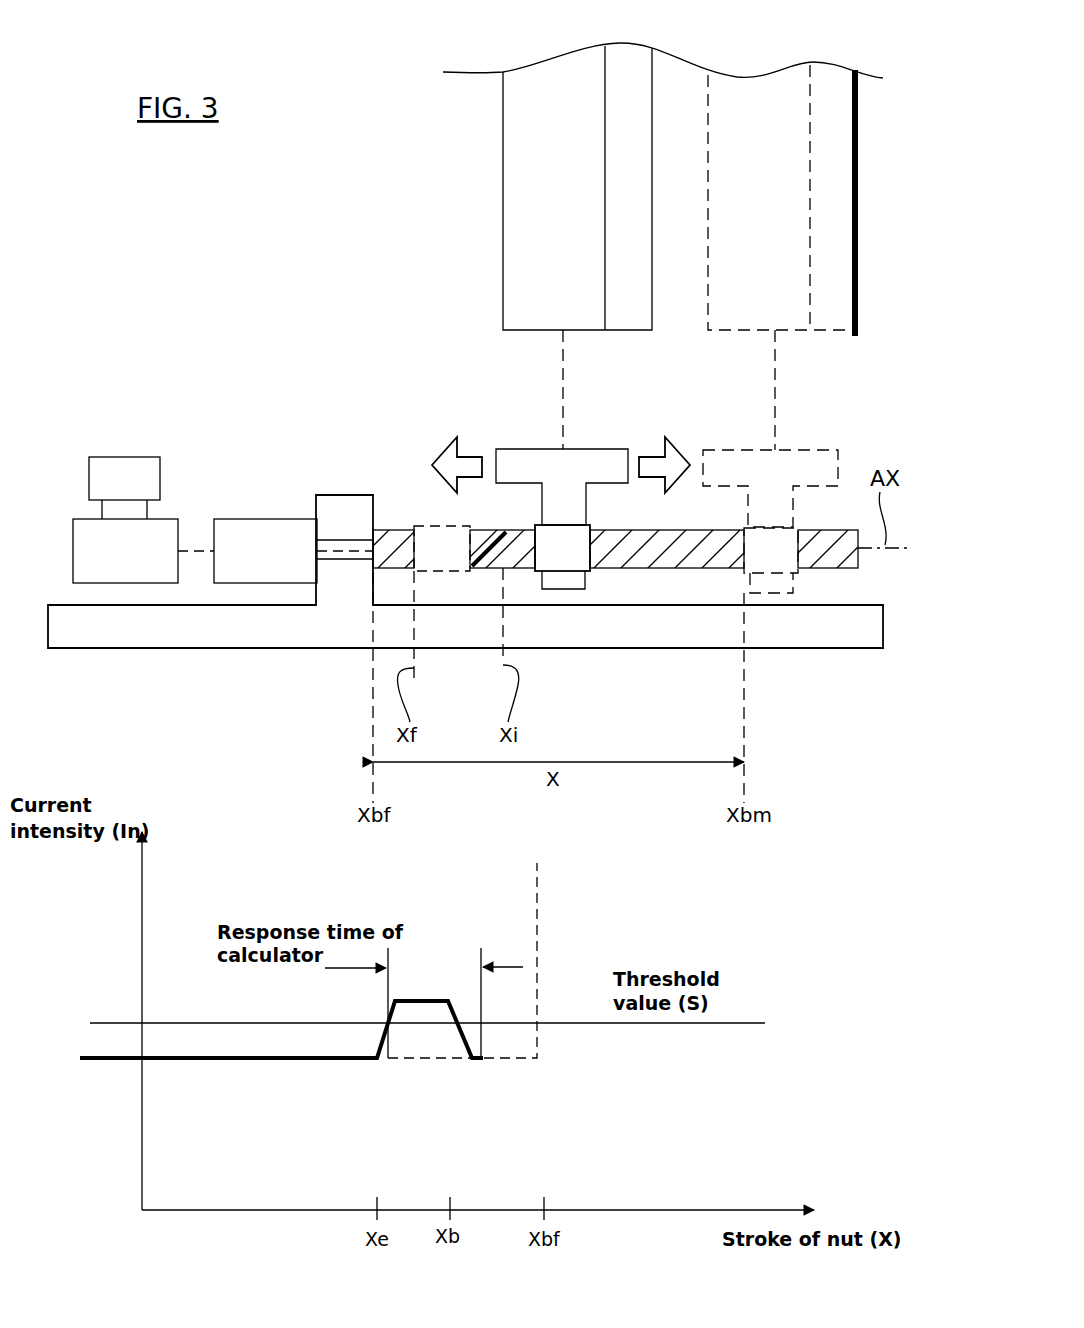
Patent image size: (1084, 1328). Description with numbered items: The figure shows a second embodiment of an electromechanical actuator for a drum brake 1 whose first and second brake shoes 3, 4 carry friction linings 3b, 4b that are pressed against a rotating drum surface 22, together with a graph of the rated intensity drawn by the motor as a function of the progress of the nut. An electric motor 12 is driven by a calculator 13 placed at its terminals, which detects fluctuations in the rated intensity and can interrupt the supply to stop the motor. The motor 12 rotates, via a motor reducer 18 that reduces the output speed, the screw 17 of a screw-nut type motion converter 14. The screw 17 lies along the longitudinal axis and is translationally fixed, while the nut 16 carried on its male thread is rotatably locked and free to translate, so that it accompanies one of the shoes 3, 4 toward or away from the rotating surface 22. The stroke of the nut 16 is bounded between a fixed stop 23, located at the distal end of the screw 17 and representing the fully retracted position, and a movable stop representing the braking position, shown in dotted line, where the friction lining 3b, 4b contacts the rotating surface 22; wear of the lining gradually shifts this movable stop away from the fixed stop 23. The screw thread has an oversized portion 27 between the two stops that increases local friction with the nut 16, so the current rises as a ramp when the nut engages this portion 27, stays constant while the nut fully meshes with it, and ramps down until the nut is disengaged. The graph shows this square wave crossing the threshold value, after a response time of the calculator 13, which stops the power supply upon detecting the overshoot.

The drum brake 1 is at (200, 349).
The first brake shoe 3 is at (610, 186).
The second brake shoe 4 is at (466, 160).
The friction lining 3b is at (747, 221).
The friction lining 4b is at (640, 293).
The electric motor 12 is at (125, 551).
The calculator 13 is at (124, 488).
The screw-nut type motion converter 14 is at (838, 428).
The nut 16 is at (591, 452).
The screw 17 is at (677, 562).
The motor reducer 18 is at (275, 551).
The rotating drum surface 22 is at (852, 112).
The fixed stop 23 is at (373, 512).
The oversized portion 27 is at (491, 520).